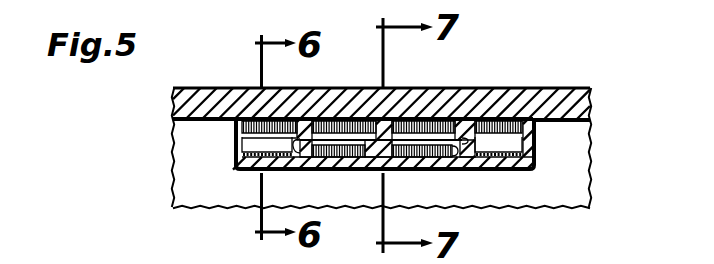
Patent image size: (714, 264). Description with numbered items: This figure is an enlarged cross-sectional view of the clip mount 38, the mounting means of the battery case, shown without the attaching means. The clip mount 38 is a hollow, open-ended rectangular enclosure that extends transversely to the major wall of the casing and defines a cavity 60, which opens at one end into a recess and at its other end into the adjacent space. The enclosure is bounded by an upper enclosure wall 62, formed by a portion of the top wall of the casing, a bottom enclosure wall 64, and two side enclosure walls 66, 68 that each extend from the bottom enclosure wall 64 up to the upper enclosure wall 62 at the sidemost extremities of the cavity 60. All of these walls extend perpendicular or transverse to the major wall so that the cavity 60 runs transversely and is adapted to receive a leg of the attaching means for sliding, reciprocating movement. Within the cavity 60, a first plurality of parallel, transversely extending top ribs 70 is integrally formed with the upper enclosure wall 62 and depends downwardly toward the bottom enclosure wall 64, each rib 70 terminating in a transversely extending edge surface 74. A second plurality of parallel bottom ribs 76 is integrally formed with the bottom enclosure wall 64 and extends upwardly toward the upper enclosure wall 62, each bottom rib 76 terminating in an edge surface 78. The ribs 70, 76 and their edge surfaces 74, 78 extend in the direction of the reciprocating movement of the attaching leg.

The clip mount 38 is at (530, 159).
The cavity 60 is at (535, 96).
The upper enclosure wall 62 is at (353, 96).
The bottom enclosure wall 64 is at (409, 160).
The side enclosure wall 66 is at (240, 147).
The side enclosure wall 68 is at (533, 131).
The top ribs 70 is at (298, 121).
The edge surface 74 is at (315, 122).
The bottom ribs 76 is at (306, 168).
The edge surface 78 is at (278, 168).